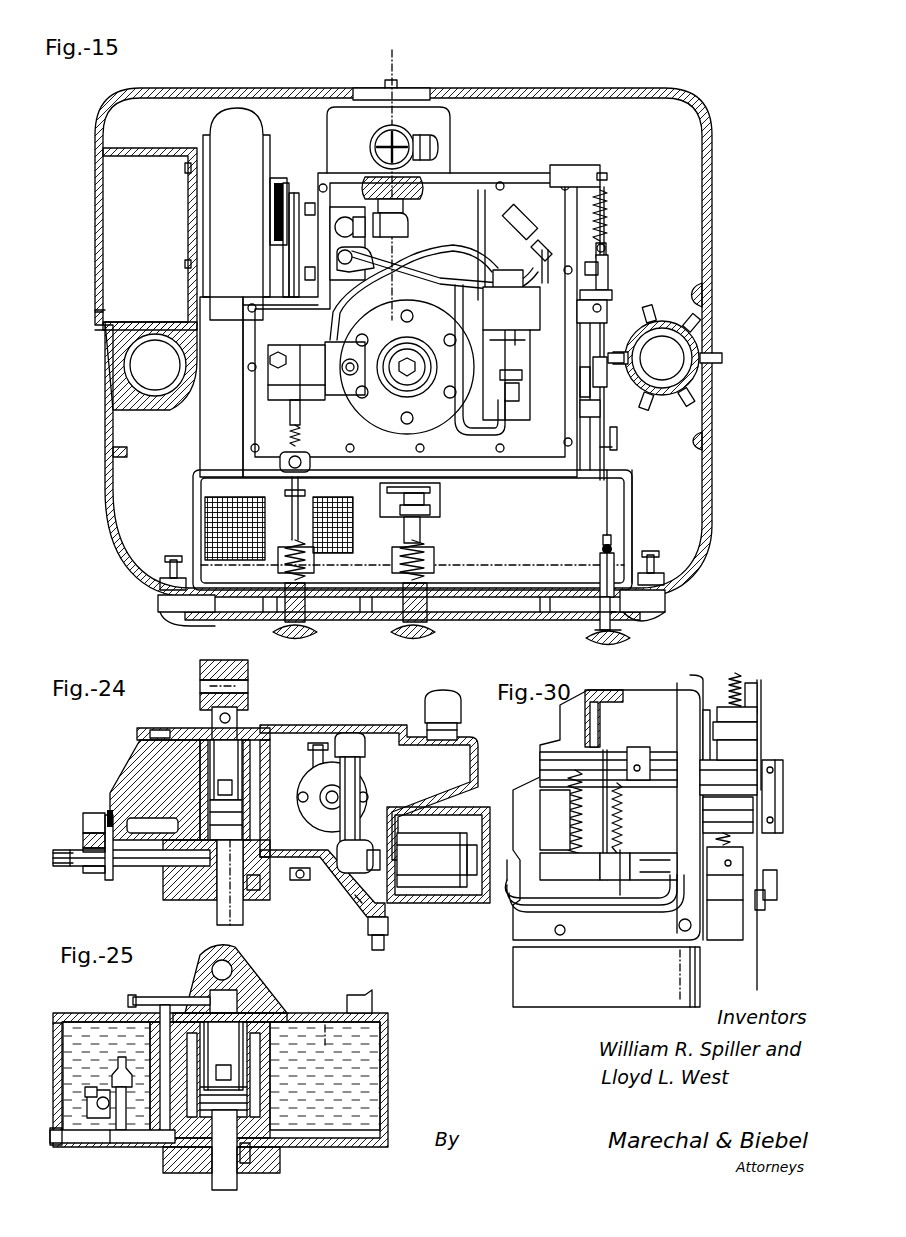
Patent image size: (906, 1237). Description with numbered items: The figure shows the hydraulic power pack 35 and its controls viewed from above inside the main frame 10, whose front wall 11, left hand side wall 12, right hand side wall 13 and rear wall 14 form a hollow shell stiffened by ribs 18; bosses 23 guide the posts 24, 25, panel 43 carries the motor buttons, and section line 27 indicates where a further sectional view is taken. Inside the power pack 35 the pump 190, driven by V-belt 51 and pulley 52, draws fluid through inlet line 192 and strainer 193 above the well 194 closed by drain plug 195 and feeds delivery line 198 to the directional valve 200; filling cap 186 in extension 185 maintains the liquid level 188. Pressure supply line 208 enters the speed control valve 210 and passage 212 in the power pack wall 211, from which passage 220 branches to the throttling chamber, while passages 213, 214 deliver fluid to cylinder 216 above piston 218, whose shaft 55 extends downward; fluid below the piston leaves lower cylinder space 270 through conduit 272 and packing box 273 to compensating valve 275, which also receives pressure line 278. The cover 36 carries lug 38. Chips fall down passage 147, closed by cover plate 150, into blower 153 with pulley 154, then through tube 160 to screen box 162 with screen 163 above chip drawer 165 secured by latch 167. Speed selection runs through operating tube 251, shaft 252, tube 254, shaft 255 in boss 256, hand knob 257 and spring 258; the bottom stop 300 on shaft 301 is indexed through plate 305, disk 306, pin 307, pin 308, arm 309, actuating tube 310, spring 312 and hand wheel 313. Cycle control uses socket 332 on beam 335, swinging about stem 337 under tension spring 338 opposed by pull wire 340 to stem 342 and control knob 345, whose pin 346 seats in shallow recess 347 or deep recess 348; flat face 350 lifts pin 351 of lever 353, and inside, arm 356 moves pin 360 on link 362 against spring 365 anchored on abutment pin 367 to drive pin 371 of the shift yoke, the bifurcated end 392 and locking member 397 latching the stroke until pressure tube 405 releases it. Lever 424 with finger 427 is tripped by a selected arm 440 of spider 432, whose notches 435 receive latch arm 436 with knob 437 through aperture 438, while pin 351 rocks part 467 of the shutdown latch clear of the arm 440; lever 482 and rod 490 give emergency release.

In FIG. 15, the main frame 10 is at (103, 521).
In FIG. 15, the front wall 11 is at (483, 615).
In FIG. 15, the left hand side wall 12 is at (105, 400).
In FIG. 15, the right hand side wall 13 is at (712, 195).
In FIG. 15, the rear wall 14 is at (612, 88).
In FIG. 15, the ribs 18 is at (306, 330).
In FIG. 15, the bosses 23 is at (147, 402).
In FIG. 15, the guide post 24 is at (367, 44).
In FIG. 15, the guide post 25 is at (670, 390).
In FIG. 15, the section line 27 is at (533, 126).
In FIG. 15, the power pack 35 is at (512, 171).
In FIG. 24, the power pack 35 is at (126, 758).
In FIG. 30, the power pack 35 is at (655, 695).
In FIG. 25, the power pack 35 is at (392, 1032).
In FIG. 24, the removable cover 36 is at (167, 730).
In FIG. 25, the removable cover 36 is at (66, 1018).
In FIG. 24, the upstanding lug 38 is at (210, 668).
In FIG. 25, the upstanding lug 38 is at (240, 950).
In FIG. 15, the panel 43 is at (370, 615).
In FIG. 15, the V-belt 51 is at (293, 193).
In FIG. 15, the pulley 52 is at (283, 265).
In FIG. 24, the piston shaft 55 is at (218, 915).
In FIG. 25, the piston shaft 55 is at (242, 1180).
In FIG. 15, the passage 147 is at (112, 226).
In FIG. 15, the cover plate 150 is at (95, 312).
In FIG. 15, the blower 153 is at (232, 115).
In FIG. 15, the drive pulley 154 is at (279, 178).
In FIG. 15, the tube 160 is at (213, 456).
In FIG. 15, the screen box 162 is at (623, 494).
In FIG. 15, the screen 163 is at (210, 517).
In FIG. 15, the chip drawer 165 is at (632, 518).
In FIG. 15, the latch means 167 is at (158, 605).
In FIG. 15, the extension 185 is at (450, 122).
In FIG. 15, the filling cap 186 is at (400, 130).
In FIG. 24, the filling cap 186 is at (430, 695).
In FIG. 25, the liquid level 188 is at (313, 1013).
In FIG. 15, the liquid pump 190 is at (338, 207).
In FIG. 24, the liquid pump 190 is at (318, 807).
In FIG. 15, the inlet line 192 is at (403, 210).
In FIG. 24, the inlet line 192 is at (360, 777).
In FIG. 15, the strainer 193 is at (430, 180).
In FIG. 24, the strainer 193 is at (425, 887).
In FIG. 24, the well 194 is at (370, 920).
In FIG. 24, the drain plug 195 is at (378, 940).
In FIG. 15, the delivery line 198 is at (400, 270).
In FIG. 15, the directional valve 200 is at (508, 300).
In FIG. 15, the pressure supply line 208 is at (453, 247).
In FIG. 25, the pressure supply line 208 is at (118, 1060).
In FIG. 15, the speed control valve 210 is at (275, 388).
In FIG. 25, the speed control valve 210 is at (83, 1095).
In FIG. 25, the power pack wall 211 is at (122, 1145).
In FIG. 25, the passage 212 is at (90, 1143).
In FIG. 25, the passage 213 is at (140, 1013).
In FIG. 25, the passage 214 is at (175, 999).
In FIG. 25, the cylinder 216 is at (263, 1005).
In FIG. 24, the piston 218 is at (313, 757).
In FIG. 25, the piston 218 is at (235, 1075).
In FIG. 25, the passage 220 is at (68, 1123).
In FIG. 15, the operating tube 251 is at (300, 435).
In FIG. 15, the shaft 252 is at (310, 463).
In FIG. 24, the shaft 252 is at (108, 812).
In FIG. 15, the tube 254 is at (292, 500).
In FIG. 15, the shaft 255 is at (330, 525).
In FIG. 15, the boss 256 is at (305, 620).
In FIG. 15, the hand knob 257 is at (290, 640).
In FIG. 15, the spring 258 is at (283, 555).
In FIG. 24, the lower cylinder space 270 is at (248, 882).
In FIG. 25, the lower cylinder space 270 is at (250, 1150).
In FIG. 24, the conduit 272 is at (357, 900).
In FIG. 24, the packing box 273 is at (300, 880).
In FIG. 25, the packing box 273 is at (185, 1170).
In FIG. 15, the hydraulic compensating valve 275 is at (527, 225).
In FIG. 15, the pressure line 278 is at (606, 231).
In FIG. 24, the stop 300 is at (180, 880).
In FIG. 24, the shaft 301 is at (137, 866).
In FIG. 24, the plate 305 is at (107, 866).
In FIG. 15, the disk 306 is at (440, 497).
In FIG. 24, the disk 306 is at (95, 812).
In FIG. 24, the pin 307 is at (90, 873).
In FIG. 15, the pin 308 is at (420, 485).
In FIG. 24, the pin 308 is at (88, 825).
In FIG. 15, the arm 309 is at (440, 510).
In FIG. 24, the arm 309 is at (85, 840).
In FIG. 15, the actuating tube 310 is at (420, 525).
In FIG. 24, the actuating tube 310 is at (58, 855).
In FIG. 15, the spring 312 is at (434, 553).
In FIG. 15, the hand wheel 313 is at (413, 640).
In FIG. 15, the socket 332 is at (615, 428).
In FIG. 30, the socket 332 is at (767, 900).
In FIG. 15, the beam 335 is at (612, 295).
In FIG. 30, the beam 335 is at (757, 690).
In FIG. 15, the stem 337 is at (608, 262).
In FIG. 15, the tension spring 338 is at (608, 197).
In FIG. 15, the pull wire 340 is at (603, 521).
In FIG. 30, the pull wire 340 is at (762, 960).
In FIG. 15, the stem 342 is at (601, 550).
In FIG. 15, the control knob 345 is at (590, 645).
In FIG. 15, the pin 346 is at (630, 640).
In FIG. 15, the shallow recess 347 is at (618, 615).
In FIG. 15, the deep recess 348 is at (600, 618).
In FIG. 30, the flat face 350 is at (757, 738).
In FIG. 30, the pin 351 is at (757, 722).
In FIG. 30, the lever 353 is at (733, 700).
In FIG. 30, the arm 356 is at (640, 745).
In FIG. 30, the pin 360 is at (578, 768).
In FIG. 30, the link 362 is at (610, 890).
In FIG. 30, the spring 365 is at (565, 815).
In FIG. 30, the abutment pin 367 is at (510, 912).
In FIG. 30, the pin 371 is at (625, 905).
In FIG. 30, the bifurcated end 392 is at (608, 760).
In FIG. 30, the locking member 397 is at (585, 730).
In FIG. 15, the pressure tube 405 is at (522, 433).
In FIG. 30, the pressure tube 405 is at (548, 905).
In FIG. 15, the lever 424 is at (612, 388).
In FIG. 30, the lever 424 is at (760, 830).
In FIG. 30, the finger 427 is at (772, 775).
In FIG. 15, the adjustable spider 432 is at (692, 368).
In FIG. 15, the notches 435 is at (670, 318).
In FIG. 15, the spring latch arm 436 is at (702, 340).
In FIG. 15, the operating knob 437 is at (724, 357).
In FIG. 15, the aperture 438 is at (710, 400).
In FIG. 15, the arms 440 is at (712, 312).
In FIG. 30, the projecting part 467 is at (705, 712).
In FIG. 15, the lever 482 is at (605, 450).
In FIG. 30, the lever 482 is at (740, 945).
In FIG. 30, the rod 490 is at (615, 690).